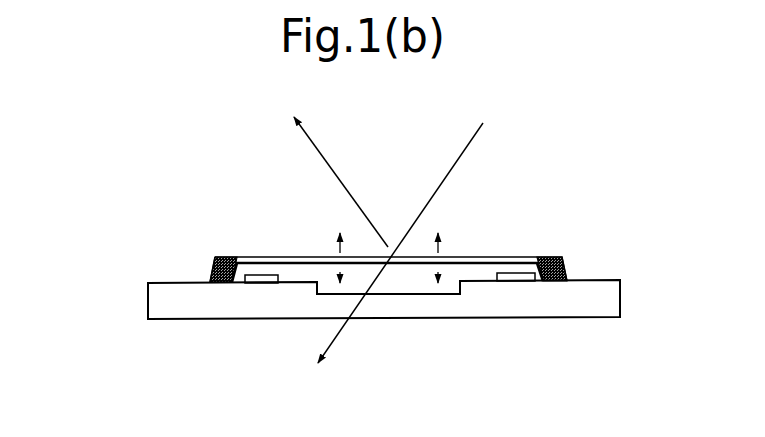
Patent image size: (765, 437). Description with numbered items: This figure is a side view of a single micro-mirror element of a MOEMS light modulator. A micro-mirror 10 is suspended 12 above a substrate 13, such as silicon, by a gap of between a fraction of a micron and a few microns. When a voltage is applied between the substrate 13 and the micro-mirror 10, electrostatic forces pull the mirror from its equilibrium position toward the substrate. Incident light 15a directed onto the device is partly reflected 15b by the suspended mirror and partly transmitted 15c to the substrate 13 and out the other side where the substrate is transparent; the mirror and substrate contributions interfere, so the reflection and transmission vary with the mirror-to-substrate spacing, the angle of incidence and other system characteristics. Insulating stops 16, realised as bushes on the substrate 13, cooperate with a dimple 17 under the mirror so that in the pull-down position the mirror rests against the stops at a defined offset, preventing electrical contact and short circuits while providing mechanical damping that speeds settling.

The micro-mirror 10 is at (497, 257).
The suspension 12 is at (562, 267).
The substrate 13 is at (172, 302).
The light 15a is at (470, 142).
The reflected light 15b is at (313, 146).
The transmitted light 15c is at (343, 340).
The insulating stops 16 is at (260, 279).
The dimple 17 is at (395, 295).